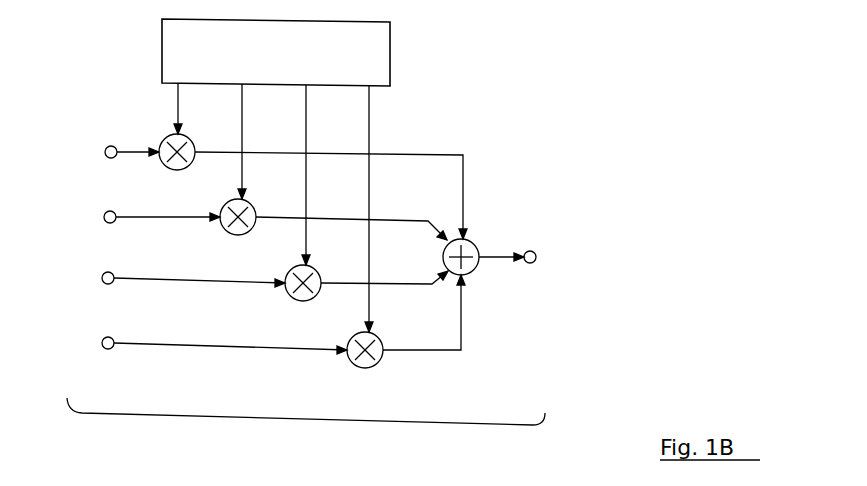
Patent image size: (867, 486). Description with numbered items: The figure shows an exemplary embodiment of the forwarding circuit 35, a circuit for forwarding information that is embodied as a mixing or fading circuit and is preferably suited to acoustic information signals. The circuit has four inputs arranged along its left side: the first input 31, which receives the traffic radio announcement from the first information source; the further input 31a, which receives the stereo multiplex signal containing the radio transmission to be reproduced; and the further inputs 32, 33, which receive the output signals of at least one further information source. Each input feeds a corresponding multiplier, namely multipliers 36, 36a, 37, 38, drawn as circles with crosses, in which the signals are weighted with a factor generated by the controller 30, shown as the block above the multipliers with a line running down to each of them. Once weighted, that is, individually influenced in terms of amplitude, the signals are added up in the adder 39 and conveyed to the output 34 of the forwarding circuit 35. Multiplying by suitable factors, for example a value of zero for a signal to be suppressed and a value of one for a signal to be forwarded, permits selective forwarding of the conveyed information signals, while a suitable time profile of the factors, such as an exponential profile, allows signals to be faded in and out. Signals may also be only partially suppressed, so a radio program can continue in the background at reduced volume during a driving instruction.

The controller 30 is at (292, 65).
The first input 31 is at (104, 152).
The further input 31a is at (103, 217).
The further input 32 is at (101, 278).
The further input 33 is at (101, 343).
The output 34 is at (537, 258).
The forwarding circuit 35 is at (298, 418).
The multiplier 36 is at (166, 167).
The multiplier 36a is at (222, 232).
The multiplier 37 is at (288, 298).
The multiplier 38 is at (351, 366).
The adder 39 is at (476, 272).